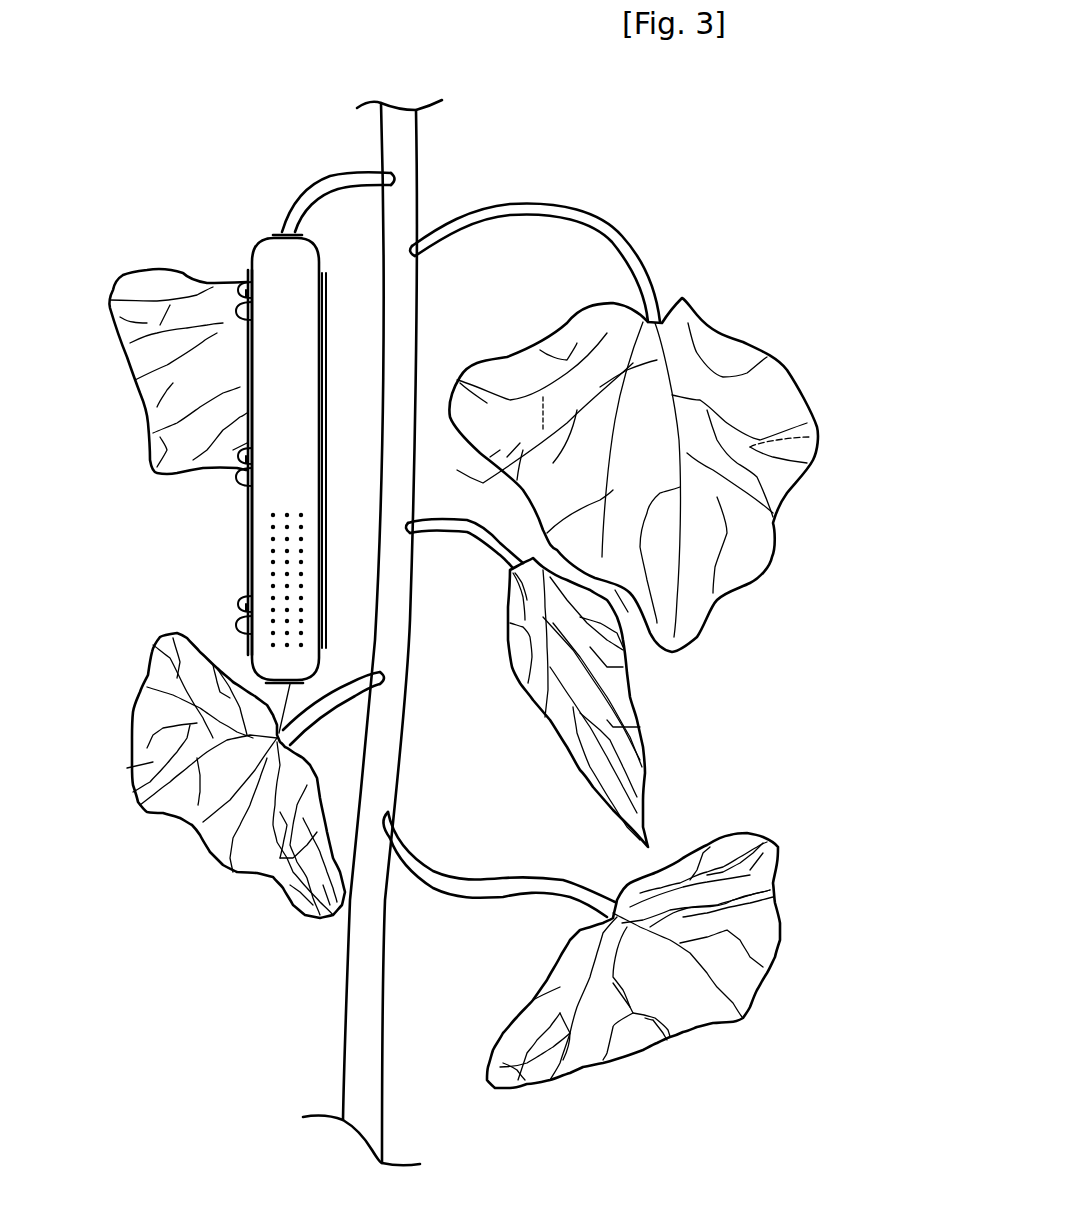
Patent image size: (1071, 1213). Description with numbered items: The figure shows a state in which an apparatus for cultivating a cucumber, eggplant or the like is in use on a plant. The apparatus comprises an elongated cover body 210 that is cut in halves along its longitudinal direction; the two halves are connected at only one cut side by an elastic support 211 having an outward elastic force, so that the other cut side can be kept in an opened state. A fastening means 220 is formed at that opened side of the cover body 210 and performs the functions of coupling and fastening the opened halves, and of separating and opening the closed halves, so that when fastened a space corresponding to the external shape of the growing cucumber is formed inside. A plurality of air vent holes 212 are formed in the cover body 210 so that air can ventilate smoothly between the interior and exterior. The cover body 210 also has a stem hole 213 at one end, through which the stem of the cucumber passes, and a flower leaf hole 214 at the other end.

The cover body 210 is at (206, 427).
The elastic support 211 is at (348, 365).
The air vent holes 212 is at (275, 562).
The stem hole 213 is at (277, 233).
The flower leaf hole 214 is at (192, 825).
The fastening means 220 is at (245, 465).